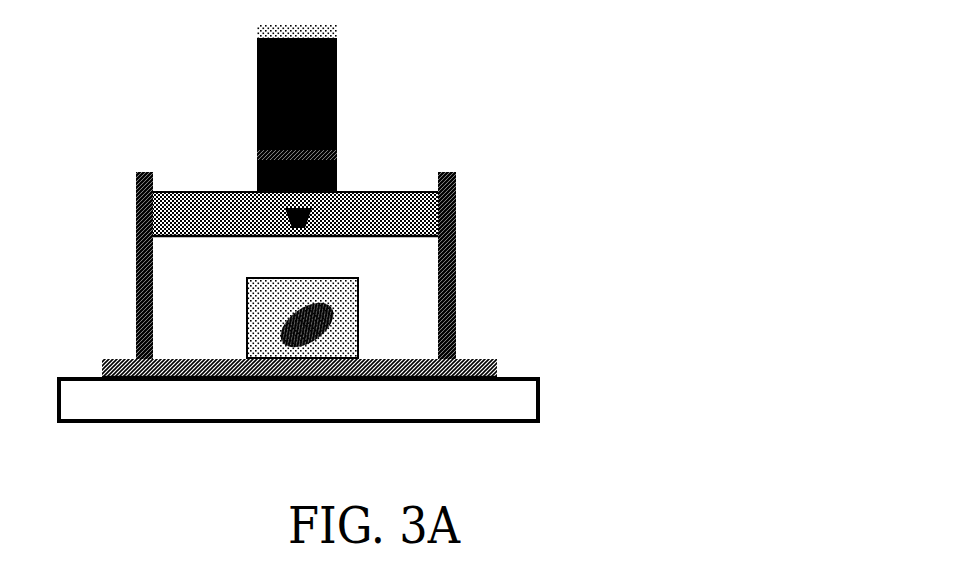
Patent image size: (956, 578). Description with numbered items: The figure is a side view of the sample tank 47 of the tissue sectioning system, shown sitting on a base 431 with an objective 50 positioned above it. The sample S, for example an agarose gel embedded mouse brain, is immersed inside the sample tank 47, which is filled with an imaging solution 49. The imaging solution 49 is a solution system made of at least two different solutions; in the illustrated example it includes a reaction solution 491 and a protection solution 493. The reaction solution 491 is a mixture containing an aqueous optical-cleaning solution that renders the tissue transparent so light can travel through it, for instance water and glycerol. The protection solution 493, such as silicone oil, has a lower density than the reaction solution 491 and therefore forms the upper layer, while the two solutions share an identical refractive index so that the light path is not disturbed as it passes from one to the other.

The image capturing device (camera) 50 is at (322, 73).
The imaging solution 49 is at (396, 252).
The reaction solution 491 is at (400, 210).
The protection solution 493 is at (403, 267).
The sample S is at (358, 325).
The sample tank 47 is at (492, 370).
The base 431 is at (540, 398).